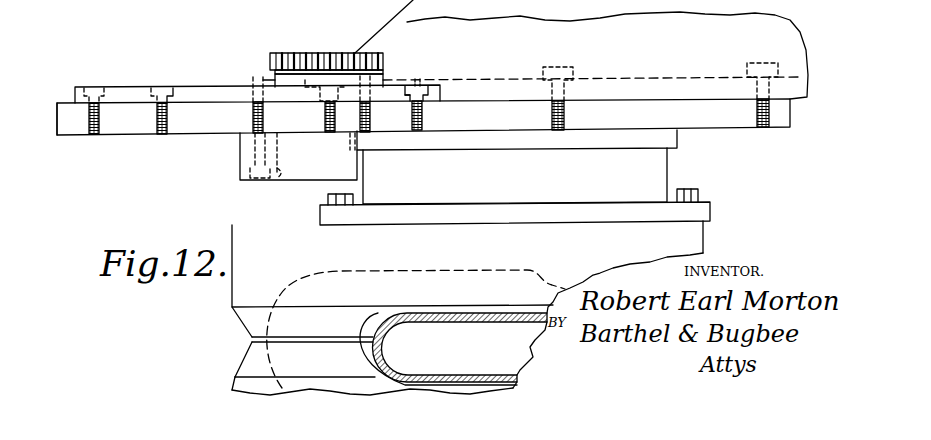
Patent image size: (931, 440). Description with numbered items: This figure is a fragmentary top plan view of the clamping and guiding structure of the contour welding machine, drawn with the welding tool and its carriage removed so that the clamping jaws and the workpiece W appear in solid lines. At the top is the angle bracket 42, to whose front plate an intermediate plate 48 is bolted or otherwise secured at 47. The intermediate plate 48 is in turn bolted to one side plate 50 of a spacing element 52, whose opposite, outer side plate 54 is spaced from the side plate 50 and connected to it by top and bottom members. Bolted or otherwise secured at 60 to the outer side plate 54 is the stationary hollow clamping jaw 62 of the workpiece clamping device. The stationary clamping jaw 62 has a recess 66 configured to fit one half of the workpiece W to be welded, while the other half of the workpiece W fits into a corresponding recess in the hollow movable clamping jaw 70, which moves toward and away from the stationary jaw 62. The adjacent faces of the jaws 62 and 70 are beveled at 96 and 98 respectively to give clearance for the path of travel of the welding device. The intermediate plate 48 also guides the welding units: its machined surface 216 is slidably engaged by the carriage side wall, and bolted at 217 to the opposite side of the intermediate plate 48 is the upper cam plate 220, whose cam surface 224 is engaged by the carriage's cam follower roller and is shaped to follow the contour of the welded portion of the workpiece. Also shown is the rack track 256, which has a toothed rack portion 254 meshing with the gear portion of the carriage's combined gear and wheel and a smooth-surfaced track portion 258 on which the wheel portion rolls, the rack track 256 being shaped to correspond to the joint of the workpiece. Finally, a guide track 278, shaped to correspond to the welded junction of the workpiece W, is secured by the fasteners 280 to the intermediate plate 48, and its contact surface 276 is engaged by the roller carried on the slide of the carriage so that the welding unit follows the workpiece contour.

The angle bracket 42 is at (412, 34).
The bolted connection 47 is at (565, 66).
The intermediate plate 48 is at (130, 123).
The side plate 50 is at (676, 142).
The spacing element 52 is at (669, 168).
The outer side plate 54 is at (332, 214).
The bolted connection 60 is at (356, 199).
The stationary hollow clamping jaw 62 is at (231, 293).
The recess 66 is at (430, 264).
The movable clamping jaw 70 is at (232, 386).
The beveled face 96 is at (240, 328).
The beveled face 98 is at (248, 364).
The machined surface 216 is at (182, 134).
The bolts 217 is at (93, 87).
The cam plate 220 is at (202, 87).
The cam surface 224 is at (148, 90).
The rack portion 254 is at (320, 60).
The rack track 256 is at (388, 65).
The track portion 258 is at (265, 79).
The contact surface 276 is at (280, 181).
The guide track 278 is at (300, 170).
The fasteners 280 is at (256, 163).
The workpiece W is at (468, 318).